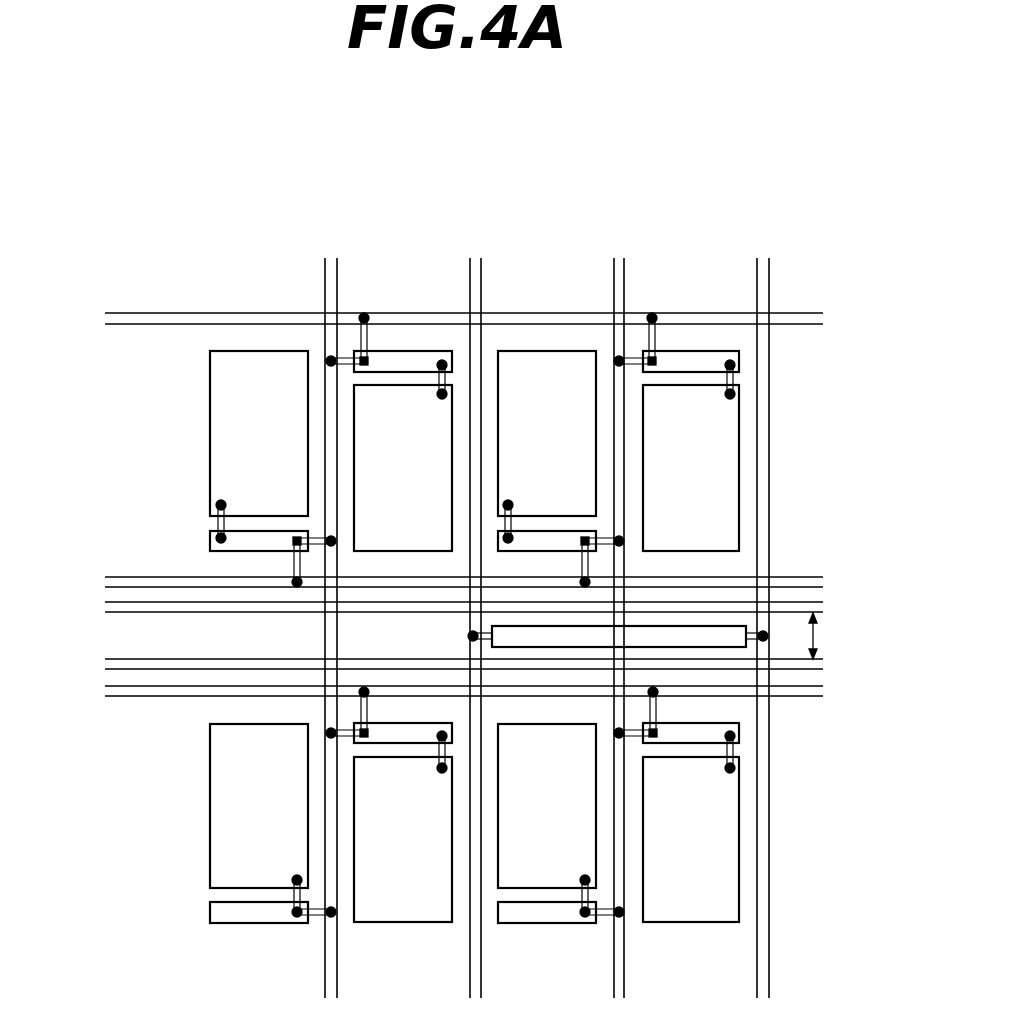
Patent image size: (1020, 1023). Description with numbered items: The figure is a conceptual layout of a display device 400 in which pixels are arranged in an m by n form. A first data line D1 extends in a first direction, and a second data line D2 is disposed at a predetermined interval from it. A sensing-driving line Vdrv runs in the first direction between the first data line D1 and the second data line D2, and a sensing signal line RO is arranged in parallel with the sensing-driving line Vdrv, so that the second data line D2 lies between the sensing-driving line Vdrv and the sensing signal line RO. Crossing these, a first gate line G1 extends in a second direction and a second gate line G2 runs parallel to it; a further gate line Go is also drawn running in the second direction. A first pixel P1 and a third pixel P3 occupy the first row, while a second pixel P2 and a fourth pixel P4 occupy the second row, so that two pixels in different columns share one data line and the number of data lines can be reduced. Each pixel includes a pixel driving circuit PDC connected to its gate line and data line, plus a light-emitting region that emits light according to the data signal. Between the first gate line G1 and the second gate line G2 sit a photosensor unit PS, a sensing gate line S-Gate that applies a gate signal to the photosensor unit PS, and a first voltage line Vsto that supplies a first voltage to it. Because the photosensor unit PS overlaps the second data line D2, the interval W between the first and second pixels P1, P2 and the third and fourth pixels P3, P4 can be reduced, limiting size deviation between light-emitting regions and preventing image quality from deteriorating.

The display device 400 is at (140, 188).
The first pixel P1 is at (228, 360).
The second pixel P2 is at (374, 915).
The third pixel P3 is at (538, 358).
The fourth pixel P4 is at (667, 915).
The pixel driving circuit PDC is at (417, 357).
The photosensor unit PS is at (618, 636).
The first data line D1 is at (331, 614).
The second data line D2 is at (620, 614).
The sensing-driving line Vdrv is at (478, 614).
The sensing signal line RO is at (762, 614).
The gate line Go is at (445, 317).
The first gate line G1 is at (445, 581).
The second gate line G2 is at (445, 687).
The sensing gate line S-Gate is at (423, 607).
The first voltage line Vsto is at (436, 662).
The interval width W is at (829, 636).